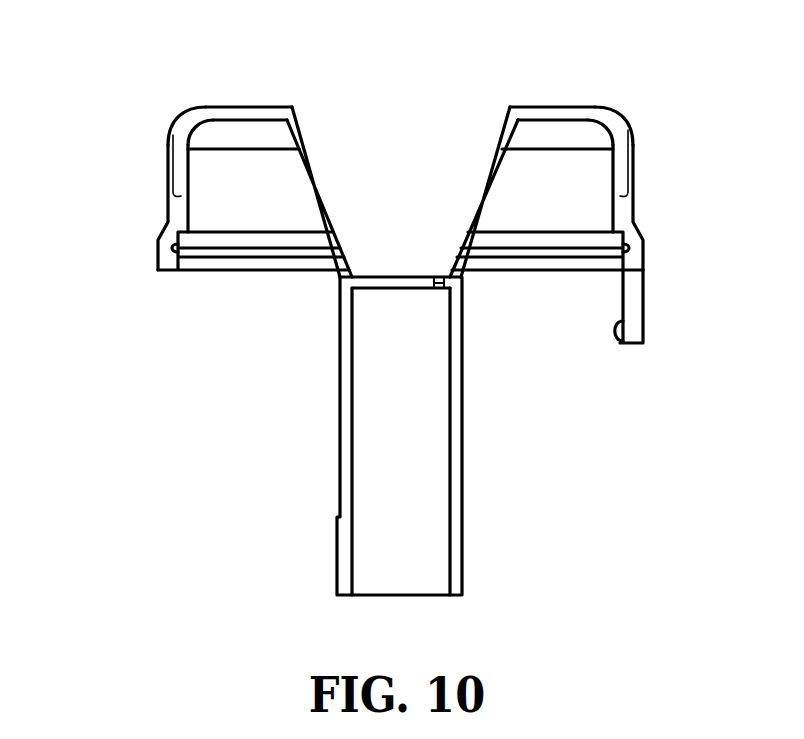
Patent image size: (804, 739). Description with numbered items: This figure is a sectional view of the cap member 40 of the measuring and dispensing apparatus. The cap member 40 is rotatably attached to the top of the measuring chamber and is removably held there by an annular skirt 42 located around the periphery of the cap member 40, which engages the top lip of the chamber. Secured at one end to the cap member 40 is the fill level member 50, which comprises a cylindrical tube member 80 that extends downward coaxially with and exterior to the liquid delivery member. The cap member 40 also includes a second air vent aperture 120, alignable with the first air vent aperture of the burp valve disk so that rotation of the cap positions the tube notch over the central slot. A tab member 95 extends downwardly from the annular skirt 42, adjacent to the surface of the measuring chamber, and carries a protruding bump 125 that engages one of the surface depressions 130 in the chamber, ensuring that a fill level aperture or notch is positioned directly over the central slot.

The cap member 40 is at (240, 105).
The surface depressions 130 is at (167, 146).
The annular skirt 42 is at (168, 258).
The tab member 95 is at (646, 305).
The protruding bump 125 is at (618, 337).
The fill level member 50 is at (516, 495).
The second air vent aperture 120 is at (435, 276).
The cylindrical tube member 80 is at (345, 450).